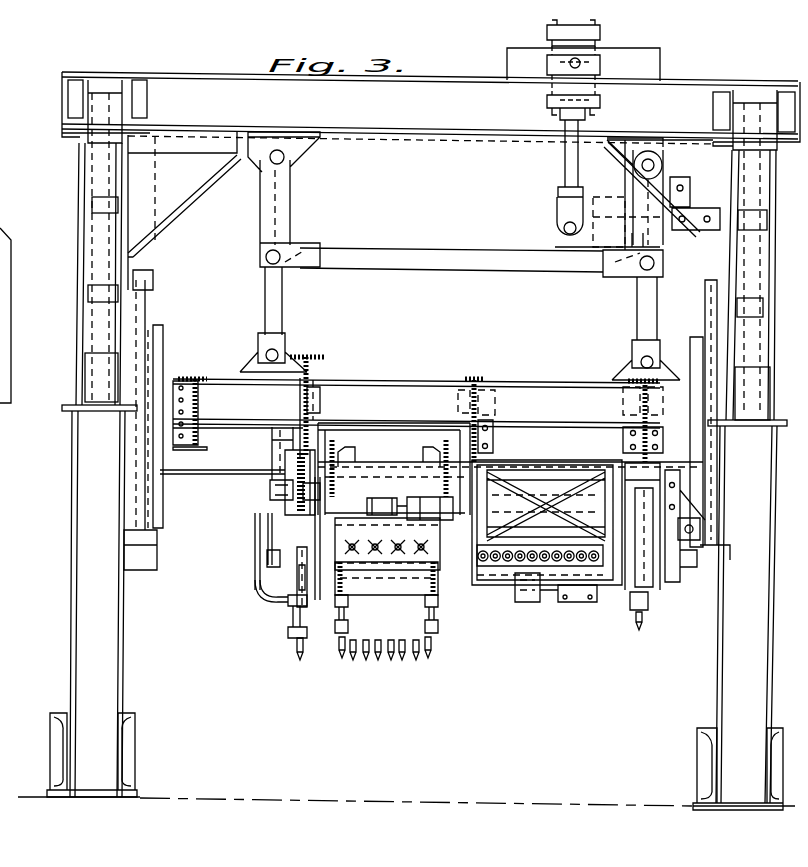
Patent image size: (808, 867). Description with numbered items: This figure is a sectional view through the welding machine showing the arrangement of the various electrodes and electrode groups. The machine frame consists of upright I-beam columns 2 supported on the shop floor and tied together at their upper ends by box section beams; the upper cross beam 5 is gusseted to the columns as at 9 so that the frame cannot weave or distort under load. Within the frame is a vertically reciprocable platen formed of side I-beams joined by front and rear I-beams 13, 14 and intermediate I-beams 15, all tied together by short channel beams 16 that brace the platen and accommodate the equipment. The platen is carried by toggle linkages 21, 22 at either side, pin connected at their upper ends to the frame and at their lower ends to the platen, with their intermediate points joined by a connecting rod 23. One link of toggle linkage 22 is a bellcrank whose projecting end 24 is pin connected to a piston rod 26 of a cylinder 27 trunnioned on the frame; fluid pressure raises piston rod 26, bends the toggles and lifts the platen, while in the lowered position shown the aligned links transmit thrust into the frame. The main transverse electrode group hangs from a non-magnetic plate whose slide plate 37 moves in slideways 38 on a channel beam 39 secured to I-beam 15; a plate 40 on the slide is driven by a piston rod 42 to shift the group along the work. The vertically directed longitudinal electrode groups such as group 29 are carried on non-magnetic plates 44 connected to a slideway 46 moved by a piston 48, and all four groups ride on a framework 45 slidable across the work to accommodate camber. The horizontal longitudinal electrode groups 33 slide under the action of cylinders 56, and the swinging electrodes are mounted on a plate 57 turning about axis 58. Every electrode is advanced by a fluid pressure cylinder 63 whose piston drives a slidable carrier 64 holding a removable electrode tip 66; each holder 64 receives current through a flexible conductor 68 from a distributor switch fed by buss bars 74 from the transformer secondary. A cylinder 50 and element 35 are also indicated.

The upright I-beam column 2 is at (423, 441).
The top cross beam 5 is at (430, 96).
The gusset 9 is at (424, 194).
The front I-beam 13 is at (196, 378).
The rear I-beam 14 is at (649, 408).
The intermediate I-beam 15 is at (312, 357).
The short channel beam 16 is at (418, 417).
The toggle linkage 21 is at (286, 211).
The toggle linkage 22 is at (637, 316).
The connecting rod 23 is at (450, 250).
The projecting end 24 is at (625, 191).
The piston rod 26 is at (565, 170).
The cylinder 27 is at (600, 31).
The vertically directed longitudinally arranged electrode group 29 is at (346, 620).
The horizontally directed longitudinally disposed electrode group 33 is at (503, 567).
The support bar 35 is at (315, 546).
The slide plate 37 is at (290, 498).
The slideway 38 is at (321, 510).
The channel beam 39 is at (308, 515).
The plate 40 is at (290, 465).
The piston rod 42 is at (270, 484).
The non-magnetic electrode carrying plate 44 is at (386, 578).
The framework 45 is at (510, 469).
The slideway 46 is at (436, 542).
The piston 48 is at (385, 503).
The pump 50 is at (425, 508).
The cylinder 56 is at (590, 603).
The plate 57 is at (636, 580).
The axis 58 is at (668, 598).
The fluid pressure cylinder 63 is at (297, 583).
The slidable carrier 64 is at (288, 632).
The electrode tip 66 is at (297, 648).
The flexible conductor 68 is at (255, 573).
The buss bar 74 is at (256, 537).